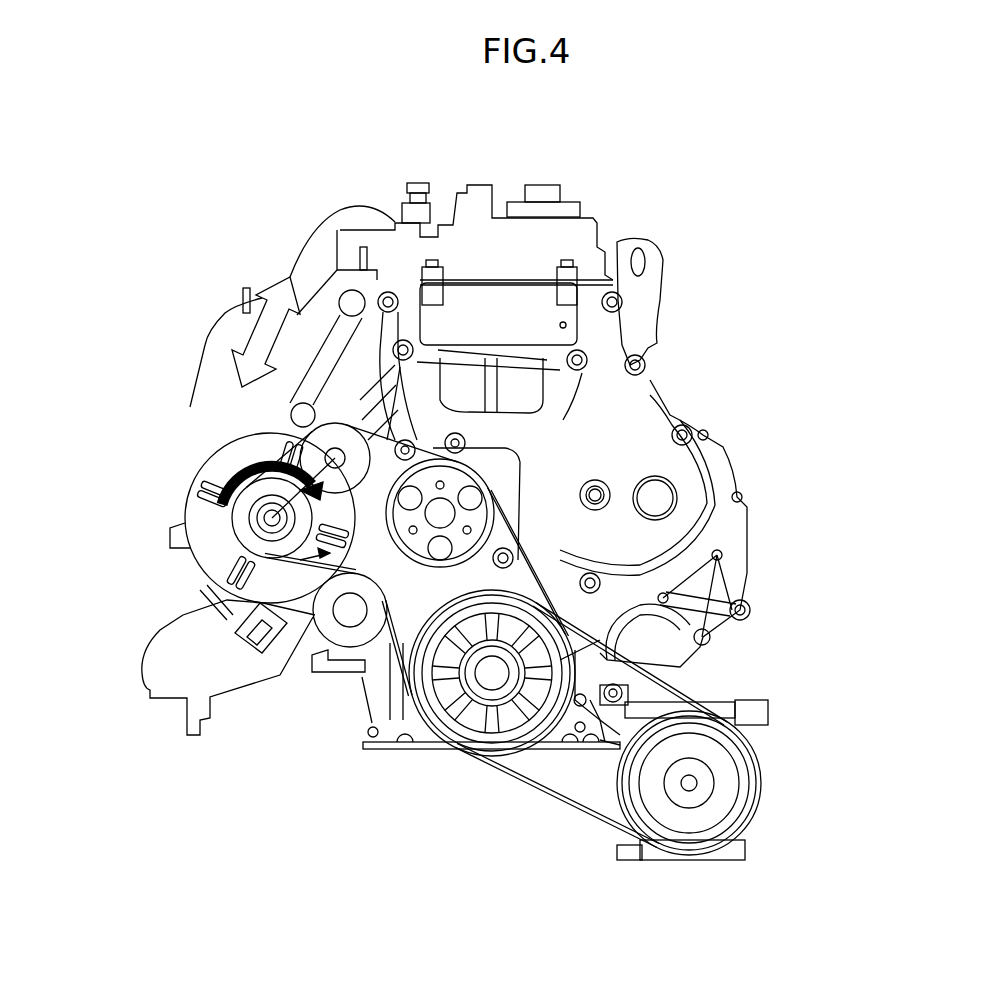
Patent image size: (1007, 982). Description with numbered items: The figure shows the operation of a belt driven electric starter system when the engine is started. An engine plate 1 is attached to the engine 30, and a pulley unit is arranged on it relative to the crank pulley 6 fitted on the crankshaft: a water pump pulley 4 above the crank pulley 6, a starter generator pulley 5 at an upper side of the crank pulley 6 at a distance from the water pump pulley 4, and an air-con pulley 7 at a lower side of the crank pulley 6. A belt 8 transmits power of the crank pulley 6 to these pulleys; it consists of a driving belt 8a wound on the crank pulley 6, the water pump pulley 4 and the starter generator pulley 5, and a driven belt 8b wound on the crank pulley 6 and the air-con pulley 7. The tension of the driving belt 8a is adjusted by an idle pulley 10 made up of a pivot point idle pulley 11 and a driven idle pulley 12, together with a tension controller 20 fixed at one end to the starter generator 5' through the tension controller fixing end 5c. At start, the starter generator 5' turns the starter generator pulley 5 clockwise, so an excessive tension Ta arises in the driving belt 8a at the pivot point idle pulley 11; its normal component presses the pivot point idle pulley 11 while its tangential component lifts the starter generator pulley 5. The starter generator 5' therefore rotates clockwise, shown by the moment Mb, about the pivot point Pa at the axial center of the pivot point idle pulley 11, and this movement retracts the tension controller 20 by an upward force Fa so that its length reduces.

The engine plate 1 is at (678, 473).
The water pump pulley 4 is at (452, 490).
The starter generator pulley 5 is at (200, 511).
The starter generator 5' is at (166, 518).
The tension controller fixing end 5c is at (285, 395).
The crank pulley 6 is at (530, 668).
The air-con pulley 7 is at (717, 783).
The belt 8 is at (486, 668).
The driving belt 8a is at (372, 720).
The driven belt 8b is at (507, 770).
The idle pulley 10 is at (140, 833).
The pivot point idle pulley 11 is at (295, 665).
The driven idle pulley 12 is at (262, 550).
The tension controller 20 is at (340, 318).
The engine 30 is at (567, 213).
The upward force Fa is at (247, 329).
The pivot point Pa is at (350, 610).
The moment Mb is at (272, 459).
The excessive tension Ta is at (324, 534).